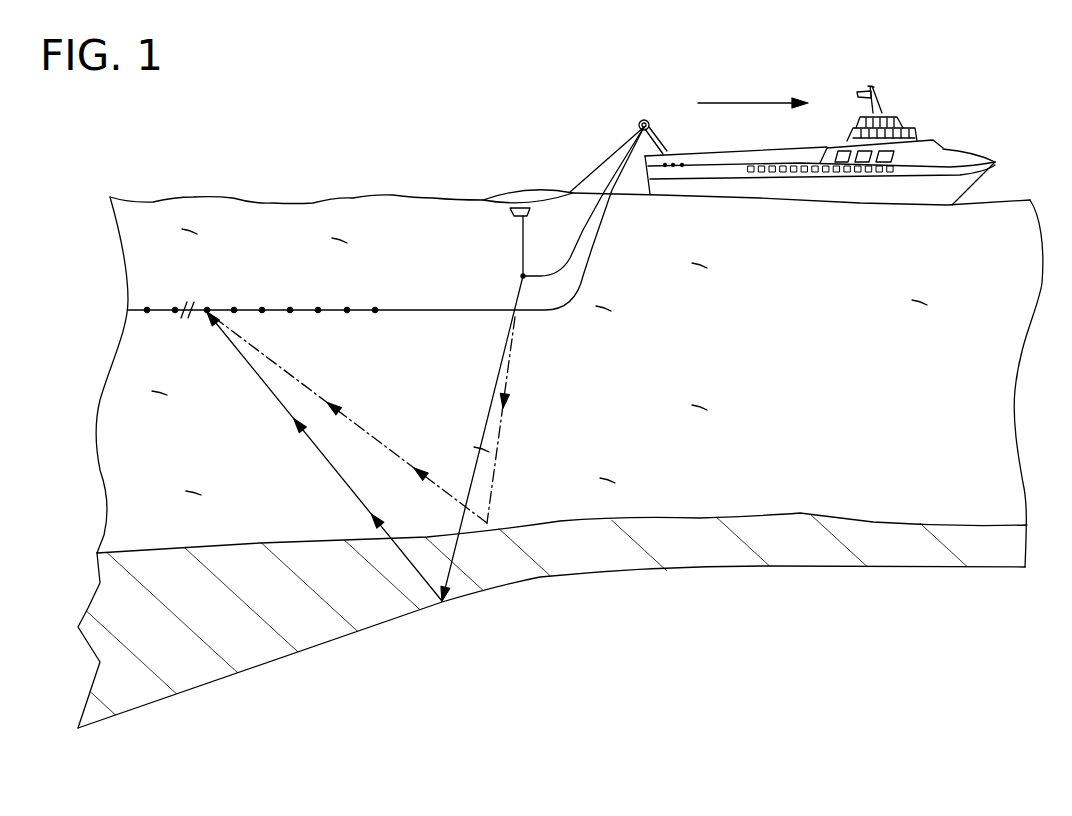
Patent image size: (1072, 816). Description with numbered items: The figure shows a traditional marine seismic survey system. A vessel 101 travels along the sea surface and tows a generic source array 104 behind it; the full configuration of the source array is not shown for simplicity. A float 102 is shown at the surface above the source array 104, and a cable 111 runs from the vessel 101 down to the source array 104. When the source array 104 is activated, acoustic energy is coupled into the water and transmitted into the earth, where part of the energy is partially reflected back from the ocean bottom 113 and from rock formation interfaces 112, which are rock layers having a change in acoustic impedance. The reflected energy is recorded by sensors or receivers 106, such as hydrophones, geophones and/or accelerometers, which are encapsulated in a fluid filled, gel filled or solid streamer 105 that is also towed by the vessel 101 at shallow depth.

The vessel 101 is at (975, 147).
The float 102 is at (503, 190).
The source array 104 is at (523, 276).
The streamer 105 is at (163, 312).
The receiver 106 is at (207, 308).
The cable 111 is at (583, 230).
The rock formation interface 112 is at (845, 566).
The ocean bottom 113 is at (793, 514).